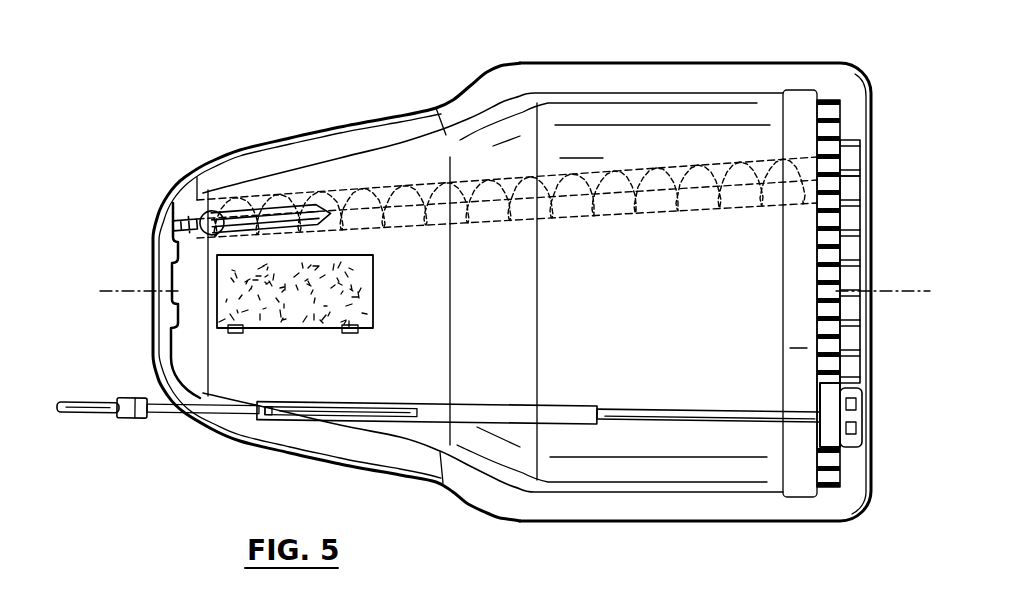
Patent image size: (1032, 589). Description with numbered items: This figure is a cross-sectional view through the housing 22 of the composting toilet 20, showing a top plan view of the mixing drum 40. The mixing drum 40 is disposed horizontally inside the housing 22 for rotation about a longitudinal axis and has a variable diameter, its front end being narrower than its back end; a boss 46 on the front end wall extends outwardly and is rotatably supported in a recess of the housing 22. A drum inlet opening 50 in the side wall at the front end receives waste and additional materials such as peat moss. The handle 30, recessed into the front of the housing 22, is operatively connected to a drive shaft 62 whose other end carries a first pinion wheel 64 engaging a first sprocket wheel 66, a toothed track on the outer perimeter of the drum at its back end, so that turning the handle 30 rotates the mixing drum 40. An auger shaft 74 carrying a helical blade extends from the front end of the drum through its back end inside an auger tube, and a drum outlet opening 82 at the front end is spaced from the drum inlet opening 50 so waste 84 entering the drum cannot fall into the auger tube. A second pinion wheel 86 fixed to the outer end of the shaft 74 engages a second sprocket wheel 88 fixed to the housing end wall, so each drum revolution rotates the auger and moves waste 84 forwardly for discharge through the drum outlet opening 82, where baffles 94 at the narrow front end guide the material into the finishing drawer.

The composting toilet 20 is at (298, 48).
The housing 22 is at (507, 62).
The handle 30 is at (90, 416).
The mixing drum 40 is at (647, 93).
The boss 46 is at (167, 303).
The drum inlet opening 50 is at (373, 293).
The drive shaft 62 is at (660, 410).
The first pinion wheel 64 is at (817, 393).
The first sprocket wheel 66 is at (827, 100).
The auger shaft 74 is at (456, 214).
The drum outlet opening 82 is at (300, 207).
The waste 84 is at (285, 298).
The second pinion wheel 86 is at (847, 140).
The second sprocket wheel 88 is at (855, 265).
The baffles 94 is at (293, 135).